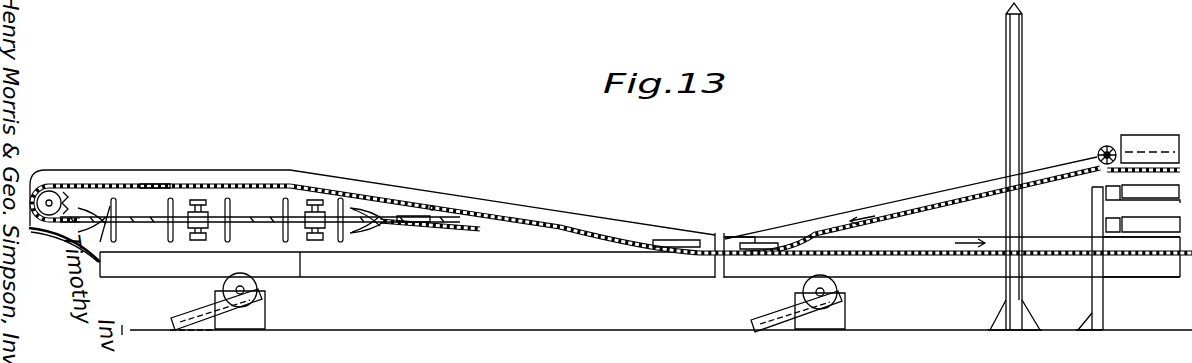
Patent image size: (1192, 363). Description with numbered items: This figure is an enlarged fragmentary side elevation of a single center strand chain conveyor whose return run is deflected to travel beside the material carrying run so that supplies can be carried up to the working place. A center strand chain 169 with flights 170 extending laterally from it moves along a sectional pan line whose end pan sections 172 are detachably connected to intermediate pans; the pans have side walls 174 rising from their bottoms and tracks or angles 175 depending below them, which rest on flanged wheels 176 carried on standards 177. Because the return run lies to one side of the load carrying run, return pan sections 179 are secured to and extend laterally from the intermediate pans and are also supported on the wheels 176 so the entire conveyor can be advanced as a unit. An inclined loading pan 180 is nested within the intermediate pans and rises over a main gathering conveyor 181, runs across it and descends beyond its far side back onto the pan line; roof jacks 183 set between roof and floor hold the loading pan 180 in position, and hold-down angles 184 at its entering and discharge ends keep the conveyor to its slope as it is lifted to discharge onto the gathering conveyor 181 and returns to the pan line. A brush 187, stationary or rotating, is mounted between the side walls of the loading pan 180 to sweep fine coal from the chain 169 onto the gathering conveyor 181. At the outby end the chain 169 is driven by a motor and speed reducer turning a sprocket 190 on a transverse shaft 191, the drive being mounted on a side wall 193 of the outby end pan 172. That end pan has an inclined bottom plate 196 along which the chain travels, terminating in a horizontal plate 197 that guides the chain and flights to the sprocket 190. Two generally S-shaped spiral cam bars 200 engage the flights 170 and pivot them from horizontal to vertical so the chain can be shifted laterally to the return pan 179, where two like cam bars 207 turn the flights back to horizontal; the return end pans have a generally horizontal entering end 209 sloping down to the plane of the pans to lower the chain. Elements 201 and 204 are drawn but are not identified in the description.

The center strand chain 169 is at (243, 216).
The flights 170 is at (278, 236).
The end pan sections 172 is at (232, 170).
The side walls 174 is at (998, 226).
The tracks or angles 175 is at (1055, 280).
The flanged wheels 176 is at (262, 287).
The standards 177 is at (265, 314).
The return pan sections 179 is at (957, 258).
The inclined loading pan 180 is at (966, 191).
The main gathering conveyor 181 is at (1092, 216).
The roof jacks 183 is at (1022, 128).
The hold-down angles 184 is at (765, 242).
The brush 187 is at (1110, 146).
The sprocket 190 is at (70, 198).
The transverse shaft 191 is at (50, 200).
The side wall 193 is at (120, 170).
The inclined bottom plate 196 is at (434, 206).
The horizontal plate 197 is at (150, 187).
The cam bars 200 is at (86, 254).
The plate 201 is at (412, 226).
The clamp 204 is at (190, 236).
The cam bars 207 is at (355, 205).
The horizontal entering end 209 is at (452, 228).